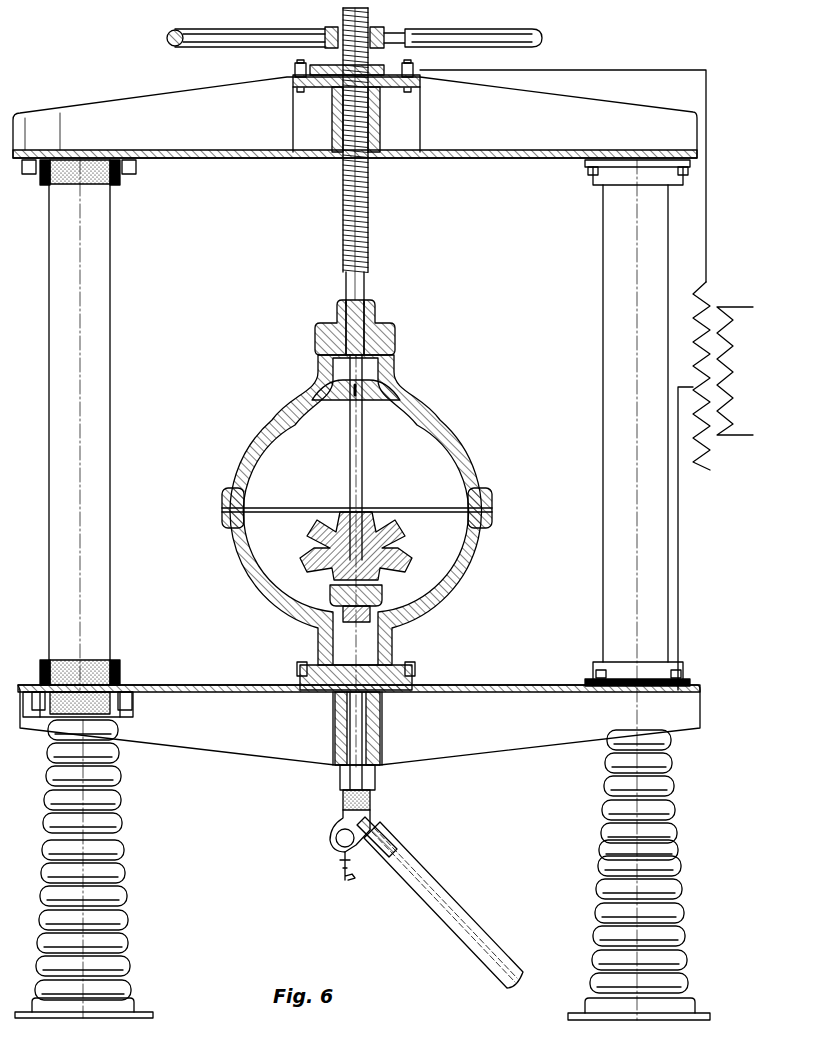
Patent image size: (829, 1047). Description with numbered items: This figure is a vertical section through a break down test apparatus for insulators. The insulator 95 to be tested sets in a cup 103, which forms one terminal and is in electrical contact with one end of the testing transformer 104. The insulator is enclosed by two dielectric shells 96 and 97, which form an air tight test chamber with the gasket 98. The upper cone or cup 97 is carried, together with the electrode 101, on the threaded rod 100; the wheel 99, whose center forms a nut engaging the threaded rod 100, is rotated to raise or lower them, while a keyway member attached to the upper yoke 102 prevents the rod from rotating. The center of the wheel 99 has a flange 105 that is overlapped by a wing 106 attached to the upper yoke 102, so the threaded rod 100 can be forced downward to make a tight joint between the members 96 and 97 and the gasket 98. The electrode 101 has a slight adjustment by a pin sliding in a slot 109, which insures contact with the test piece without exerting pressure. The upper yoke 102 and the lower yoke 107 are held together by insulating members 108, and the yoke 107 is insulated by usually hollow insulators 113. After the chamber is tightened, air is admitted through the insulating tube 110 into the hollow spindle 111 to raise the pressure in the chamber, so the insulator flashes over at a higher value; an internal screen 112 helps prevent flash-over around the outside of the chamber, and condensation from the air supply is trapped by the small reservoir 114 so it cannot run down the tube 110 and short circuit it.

The insulator 95 is at (385, 548).
The lower dielectric shell 96 is at (470, 578).
The upper dielectric shell 97 is at (468, 424).
The gasket 98 is at (493, 512).
The wheel 99 is at (488, 33).
The threaded rod 100 is at (362, 292).
The electrode 101 is at (362, 465).
The upper yoke 102 is at (510, 162).
The cup 103 is at (378, 608).
The testing transformer 104 is at (713, 440).
The flange 105 is at (382, 104).
The wing 106 is at (392, 62).
The lower yoke 107 is at (230, 742).
The insulating members 108 is at (100, 562).
The slot 109 is at (345, 398).
The tube 110 is at (445, 902).
The hollow spindle 111 is at (350, 718).
The internal screen 112 is at (405, 380).
The insulators 113 is at (112, 920).
The small reservoir 114 is at (330, 848).